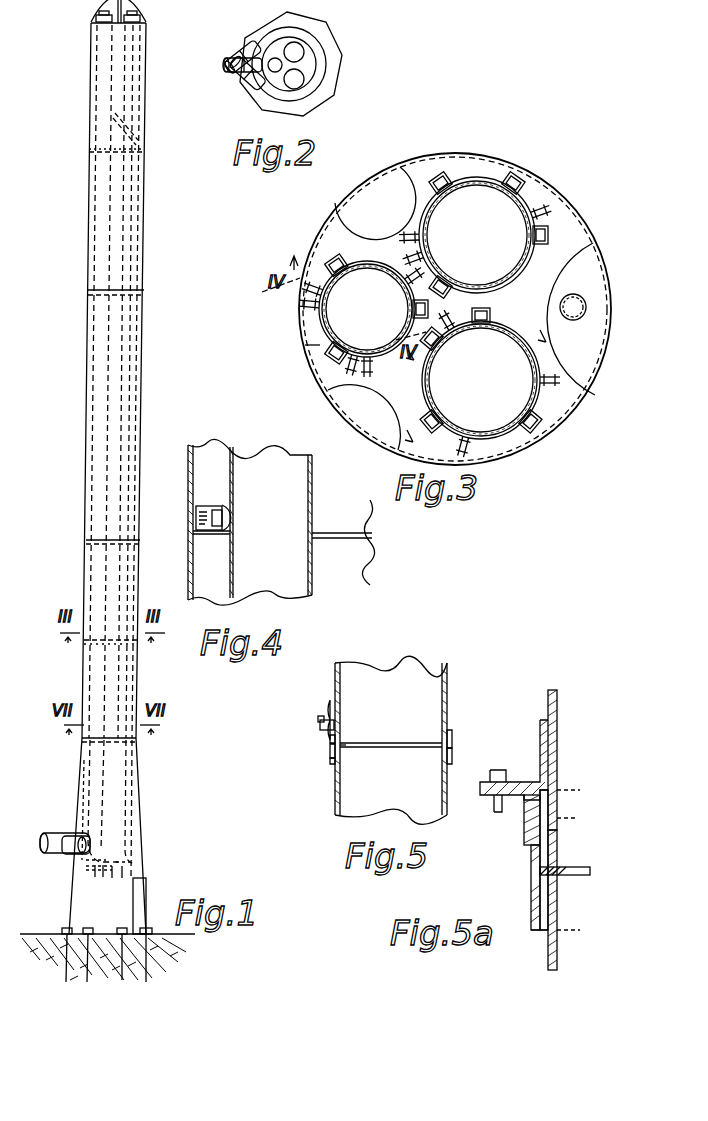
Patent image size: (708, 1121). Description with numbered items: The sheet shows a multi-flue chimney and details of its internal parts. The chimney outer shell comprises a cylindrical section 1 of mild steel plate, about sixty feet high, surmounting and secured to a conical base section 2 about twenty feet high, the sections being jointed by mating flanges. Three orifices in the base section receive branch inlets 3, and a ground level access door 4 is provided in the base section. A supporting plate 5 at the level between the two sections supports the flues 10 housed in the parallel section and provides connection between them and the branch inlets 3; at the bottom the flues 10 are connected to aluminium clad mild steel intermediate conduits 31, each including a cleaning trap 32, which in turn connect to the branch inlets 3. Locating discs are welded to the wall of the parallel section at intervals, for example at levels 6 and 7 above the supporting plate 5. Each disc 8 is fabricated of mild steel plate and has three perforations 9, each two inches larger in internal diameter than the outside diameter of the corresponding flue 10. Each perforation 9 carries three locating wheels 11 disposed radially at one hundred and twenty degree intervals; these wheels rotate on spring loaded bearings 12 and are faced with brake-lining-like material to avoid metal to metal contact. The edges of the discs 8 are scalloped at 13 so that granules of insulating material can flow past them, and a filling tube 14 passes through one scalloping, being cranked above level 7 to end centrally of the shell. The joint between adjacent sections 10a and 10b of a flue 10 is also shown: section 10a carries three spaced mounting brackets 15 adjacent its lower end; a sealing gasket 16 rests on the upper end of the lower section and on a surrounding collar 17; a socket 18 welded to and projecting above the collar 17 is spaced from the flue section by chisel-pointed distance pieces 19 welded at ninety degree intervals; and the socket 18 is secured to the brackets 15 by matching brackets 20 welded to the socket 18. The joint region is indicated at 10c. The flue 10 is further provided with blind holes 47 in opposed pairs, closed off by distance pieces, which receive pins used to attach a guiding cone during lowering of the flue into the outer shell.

In FIG. 1, the cylindrical section 1 is at (88, 400).
In FIG. 2, the cylindrical section 1 is at (316, 56).
In FIG. 3, the cylindrical section 1 is at (570, 210).
In FIG. 1, the conical base section 2 is at (140, 785).
In FIG. 2, the conical base section 2 is at (306, 30).
In FIG. 1, the branch inlets 3 is at (64, 836).
In FIG. 2, the branch inlets 3 is at (242, 48).
In FIG. 1, the ground level access door 4 is at (146, 888).
In FIG. 1, the supporting plate 5 is at (82, 739).
In FIG. 1, the locating disc level 6 is at (94, 541).
In FIG. 1, the locating disc level 7 is at (108, 154).
In FIG. 3, the locating disc 8 is at (318, 348).
In FIG. 3, the perforation 9 is at (318, 316).
In FIG. 3, the flue 10 is at (520, 190).
In FIG. 4, the flue 10 is at (233, 569).
In FIG. 5, the upper flue section 10a is at (338, 665).
In FIG. 5A, the upper flue section 10a is at (557, 697).
In FIG. 5, the lower flue section 10b is at (336, 812).
In FIG. 5A, the lower flue section 10b is at (546, 942).
In FIG. 5, the pipe joint 10c is at (342, 740).
In FIG. 5A, the pipe joint 10c is at (558, 848).
In FIG. 3, the locating wheel 11 is at (425, 228).
In FIG. 4, the locating wheel 11 is at (216, 504).
In FIG. 4, the spring loaded bearing 12 is at (216, 528).
In FIG. 3, the scalloping 13 is at (350, 225).
In FIG. 3, the filling tube 14 is at (573, 294).
In FIG. 3, the mounting bracket 15 is at (438, 192).
In FIG. 5, the mounting bracket 15 is at (332, 714).
In FIG. 5A, the mounting bracket 15 is at (540, 722).
In FIG. 5, the sealing gasket 16 is at (438, 748).
In FIG. 5A, the sealing gasket 16 is at (564, 876).
In FIG. 5, the collar 17 is at (331, 764).
In FIG. 5A, the collar 17 is at (531, 896).
In FIG. 5, the socket 18 is at (330, 752).
In FIG. 5A, the socket 18 is at (531, 862).
In FIG. 5, the distance piece 19 is at (450, 732).
In FIG. 5A, the distance piece 19 is at (540, 850).
In FIG. 5, the matching bracket 20 is at (330, 737).
In FIG. 5A, the matching bracket 20 is at (524, 832).
In FIG. 1, the intermediate conduit 31 is at (86, 781).
In FIG. 1, the cleaning trap 32 is at (84, 868).
In FIG. 5A, the blind hole 47 is at (552, 818).